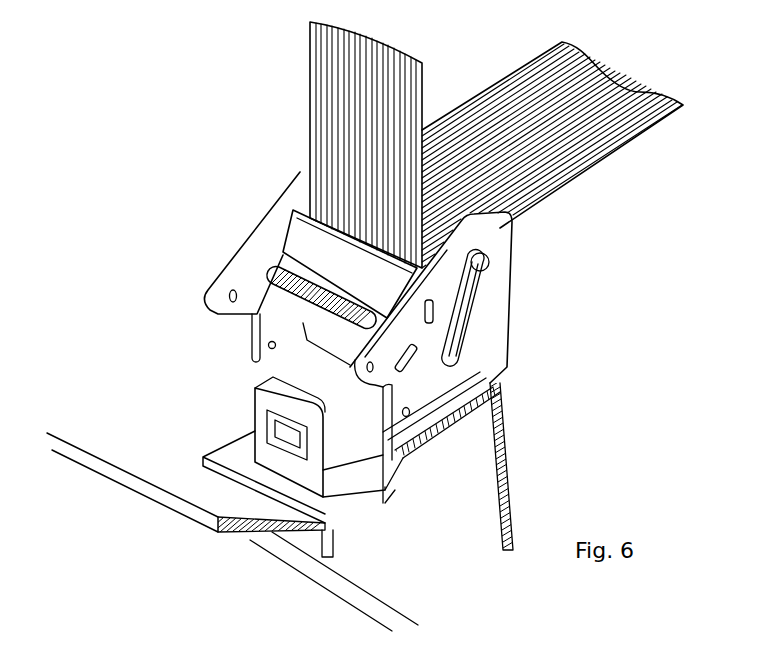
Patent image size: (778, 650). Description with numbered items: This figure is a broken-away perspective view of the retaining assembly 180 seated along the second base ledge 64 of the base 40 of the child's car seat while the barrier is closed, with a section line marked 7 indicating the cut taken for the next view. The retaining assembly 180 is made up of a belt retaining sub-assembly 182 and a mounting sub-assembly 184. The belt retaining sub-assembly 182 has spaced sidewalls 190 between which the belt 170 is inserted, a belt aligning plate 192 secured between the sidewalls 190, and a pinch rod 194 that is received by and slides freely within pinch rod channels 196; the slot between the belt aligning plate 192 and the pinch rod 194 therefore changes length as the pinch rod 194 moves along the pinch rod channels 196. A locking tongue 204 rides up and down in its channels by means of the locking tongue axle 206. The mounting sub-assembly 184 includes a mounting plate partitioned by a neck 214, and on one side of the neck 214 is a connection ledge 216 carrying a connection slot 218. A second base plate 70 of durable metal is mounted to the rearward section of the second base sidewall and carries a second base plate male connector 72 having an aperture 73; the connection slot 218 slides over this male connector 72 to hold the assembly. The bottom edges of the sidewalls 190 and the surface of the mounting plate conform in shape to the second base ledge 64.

The section line for FIG. 7 is at (300, 168).
The base 40 is at (143, 492).
The second base ledge 64 is at (157, 400).
The second base plate 70 is at (328, 572).
The second base plate male connector 72 is at (290, 467).
The aperture 73 is at (216, 469).
The belt 170 is at (570, 178).
The retaining assembly 180 is at (528, 282).
The belt retaining sub-assembly 182 is at (500, 337).
The mounting sub-assembly 184 is at (350, 518).
The sidewalls 190 is at (300, 338).
The belt aligning plate 192 is at (360, 281).
The pinch rod 194 is at (415, 343).
The pinch rod channels 196 is at (250, 335).
The locking tongue 204 is at (455, 325).
The locking tongue axle 206 is at (484, 260).
The neck 214 is at (404, 458).
The connection ledge 216 is at (398, 490).
The connection slot 218 is at (388, 517).